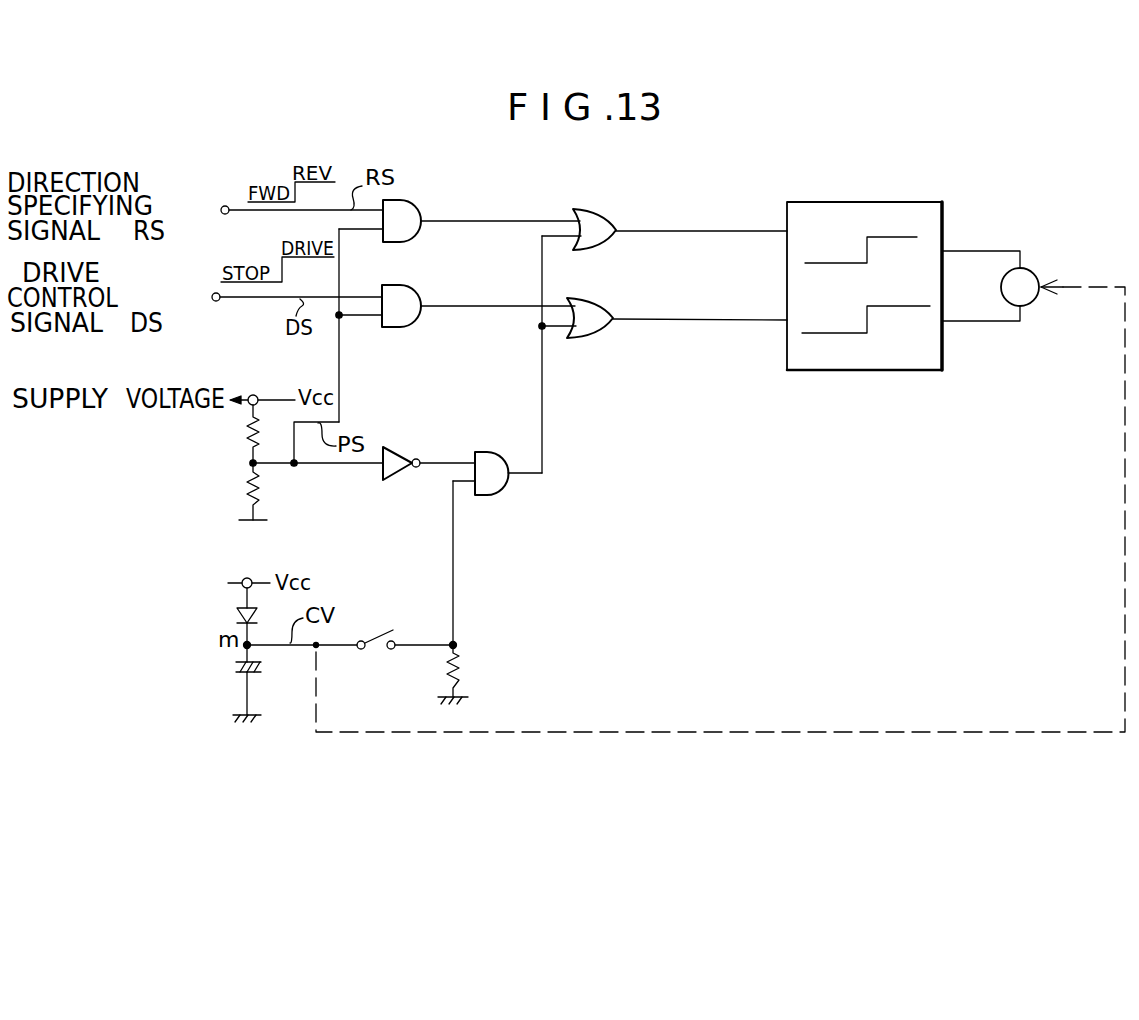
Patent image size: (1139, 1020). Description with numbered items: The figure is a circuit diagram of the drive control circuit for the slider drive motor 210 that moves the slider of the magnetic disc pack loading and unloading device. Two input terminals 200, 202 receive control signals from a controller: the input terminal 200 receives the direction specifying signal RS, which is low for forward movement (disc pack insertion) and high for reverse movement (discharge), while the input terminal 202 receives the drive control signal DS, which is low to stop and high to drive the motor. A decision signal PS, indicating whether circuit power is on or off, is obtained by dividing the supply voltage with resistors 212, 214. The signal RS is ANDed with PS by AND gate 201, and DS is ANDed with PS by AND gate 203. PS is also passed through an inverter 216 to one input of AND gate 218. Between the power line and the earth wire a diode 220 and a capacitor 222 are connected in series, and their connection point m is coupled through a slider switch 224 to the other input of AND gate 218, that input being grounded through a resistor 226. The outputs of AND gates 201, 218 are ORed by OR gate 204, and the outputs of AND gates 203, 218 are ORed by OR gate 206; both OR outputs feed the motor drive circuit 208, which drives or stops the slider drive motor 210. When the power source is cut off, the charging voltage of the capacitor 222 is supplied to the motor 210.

The input terminal 200 is at (224, 206).
The AND gate 201 is at (402, 200).
The input terminal 202 is at (216, 301).
The AND gate 203 is at (402, 286).
The OR gate 204 is at (590, 209).
The OR gate 206 is at (592, 300).
The motor drive circuit 208 is at (860, 202).
The slider drive motor 210 is at (1031, 271).
The resistor 212 is at (246, 429).
The resistor 214 is at (246, 477).
The inverter 216 is at (395, 447).
The AND gate 218 is at (488, 452).
The diode 220 is at (238, 610).
The capacitor 222 is at (238, 665).
The slider switch 224 is at (381, 648).
The resistor 226 is at (460, 666).